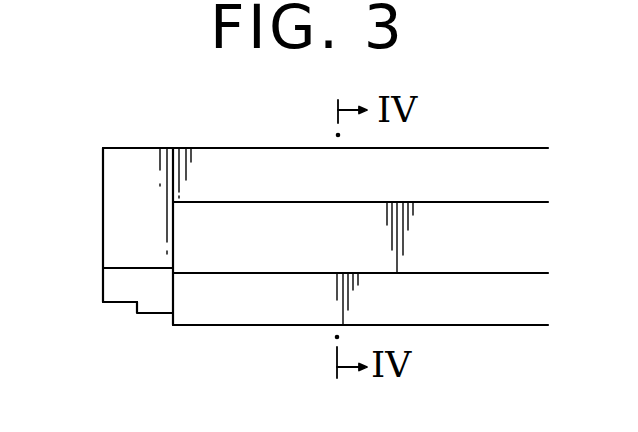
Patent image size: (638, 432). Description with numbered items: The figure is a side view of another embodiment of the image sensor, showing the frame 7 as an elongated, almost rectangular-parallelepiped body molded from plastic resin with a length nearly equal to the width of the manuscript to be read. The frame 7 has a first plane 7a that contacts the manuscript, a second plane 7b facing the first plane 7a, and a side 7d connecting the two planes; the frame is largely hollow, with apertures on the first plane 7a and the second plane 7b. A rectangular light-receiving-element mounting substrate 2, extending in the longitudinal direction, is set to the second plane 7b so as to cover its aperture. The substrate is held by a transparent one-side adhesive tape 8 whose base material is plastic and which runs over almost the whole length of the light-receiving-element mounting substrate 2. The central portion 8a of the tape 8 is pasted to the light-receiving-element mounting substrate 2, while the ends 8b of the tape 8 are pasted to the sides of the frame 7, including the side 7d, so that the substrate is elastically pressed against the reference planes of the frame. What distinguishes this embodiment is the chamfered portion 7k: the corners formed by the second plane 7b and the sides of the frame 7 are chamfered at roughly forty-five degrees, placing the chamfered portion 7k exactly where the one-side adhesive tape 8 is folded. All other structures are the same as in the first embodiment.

The frame 7 is at (145, 143).
The first plane 7a is at (212, 147).
The side 7d is at (452, 162).
The chamfered portion 7k is at (112, 287).
The second plane 7b is at (112, 304).
The light-receiving-element mounting substrate 2 is at (160, 315).
The one-side adhesive tape 8 is at (267, 302).
The both ends of the tape 8b is at (442, 257).
The central portion of the tape 8a is at (505, 325).